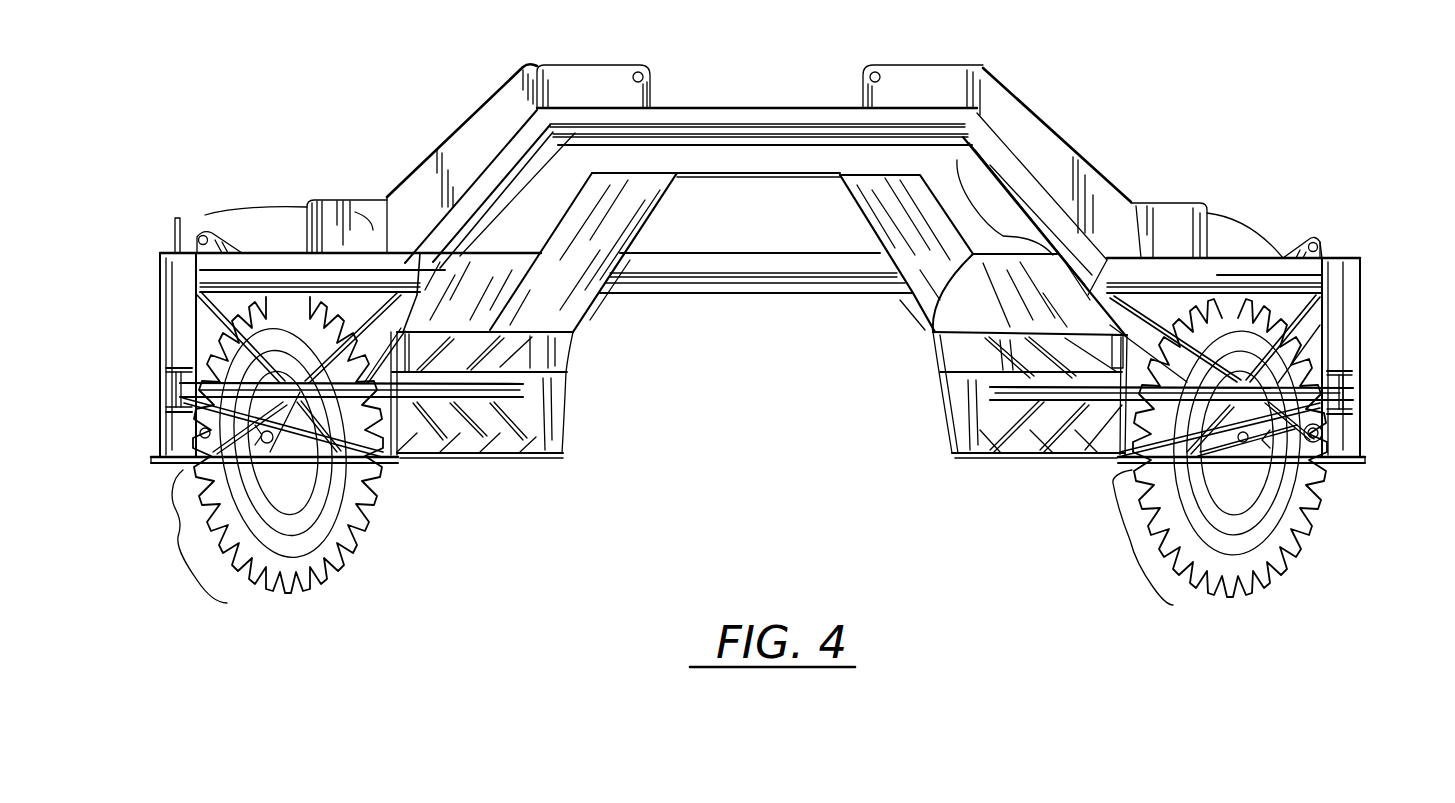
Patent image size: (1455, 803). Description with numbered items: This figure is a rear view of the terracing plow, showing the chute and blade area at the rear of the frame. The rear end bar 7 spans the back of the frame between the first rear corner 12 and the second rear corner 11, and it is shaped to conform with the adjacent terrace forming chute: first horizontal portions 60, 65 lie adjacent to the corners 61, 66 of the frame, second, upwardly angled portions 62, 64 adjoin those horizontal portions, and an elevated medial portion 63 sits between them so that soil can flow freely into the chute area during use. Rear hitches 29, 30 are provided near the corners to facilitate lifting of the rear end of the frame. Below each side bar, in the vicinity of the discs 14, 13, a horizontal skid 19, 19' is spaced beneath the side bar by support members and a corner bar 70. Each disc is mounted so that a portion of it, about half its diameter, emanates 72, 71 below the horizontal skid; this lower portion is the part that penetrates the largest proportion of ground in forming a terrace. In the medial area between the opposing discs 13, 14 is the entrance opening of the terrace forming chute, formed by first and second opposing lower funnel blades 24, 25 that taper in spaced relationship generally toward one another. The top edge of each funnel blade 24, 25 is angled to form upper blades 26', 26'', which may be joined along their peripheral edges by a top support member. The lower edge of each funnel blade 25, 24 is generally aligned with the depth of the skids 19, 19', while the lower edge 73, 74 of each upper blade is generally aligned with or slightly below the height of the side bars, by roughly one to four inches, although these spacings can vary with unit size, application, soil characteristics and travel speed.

The rear end bar 7 is at (1027, 182).
The second rear corner 11 is at (1362, 272).
The first rear corner 12 is at (160, 285).
The second disc 13 is at (1327, 540).
The first disc 14 is at (372, 533).
The horizontal skid 19 is at (320, 449).
The horizontal skid 19' is at (1206, 423).
The lower funnel blade 24 is at (948, 433).
The lower funnel blade 25 is at (567, 412).
The upper blade 26' is at (906, 253).
The upper blade 26'' is at (583, 252).
The rear hitch 29 is at (1313, 242).
The rear hitch 30 is at (208, 235).
The first horizontal portion 60 is at (1133, 203).
The corner 61 is at (1323, 250).
The upwardly angled portion 62 is at (973, 255).
The elevated medial portion 63 is at (577, 80).
The upwardly angled portion 64 is at (386, 197).
The first horizontal portion 65 is at (300, 206).
The corner 66 is at (192, 237).
The corner bar 70 is at (1365, 375).
The disc lower portion 71 is at (1129, 546).
The disc lower portion 72 is at (180, 538).
The lower edge of upper blade 73 is at (578, 333).
The lower edge of upper blade 74 is at (937, 333).